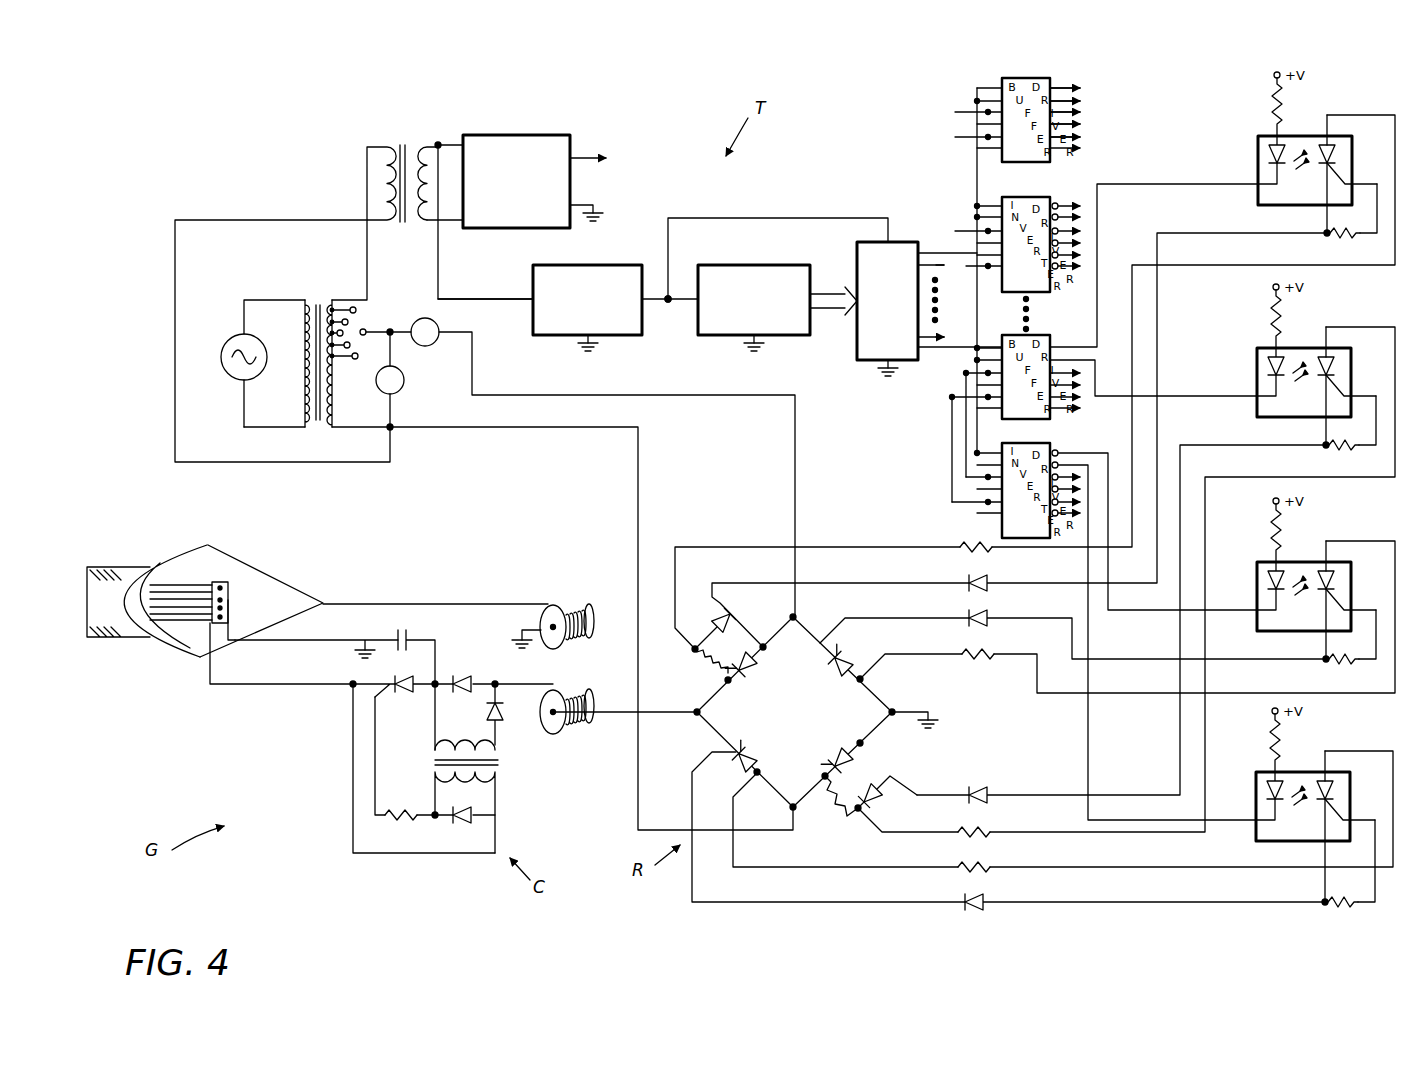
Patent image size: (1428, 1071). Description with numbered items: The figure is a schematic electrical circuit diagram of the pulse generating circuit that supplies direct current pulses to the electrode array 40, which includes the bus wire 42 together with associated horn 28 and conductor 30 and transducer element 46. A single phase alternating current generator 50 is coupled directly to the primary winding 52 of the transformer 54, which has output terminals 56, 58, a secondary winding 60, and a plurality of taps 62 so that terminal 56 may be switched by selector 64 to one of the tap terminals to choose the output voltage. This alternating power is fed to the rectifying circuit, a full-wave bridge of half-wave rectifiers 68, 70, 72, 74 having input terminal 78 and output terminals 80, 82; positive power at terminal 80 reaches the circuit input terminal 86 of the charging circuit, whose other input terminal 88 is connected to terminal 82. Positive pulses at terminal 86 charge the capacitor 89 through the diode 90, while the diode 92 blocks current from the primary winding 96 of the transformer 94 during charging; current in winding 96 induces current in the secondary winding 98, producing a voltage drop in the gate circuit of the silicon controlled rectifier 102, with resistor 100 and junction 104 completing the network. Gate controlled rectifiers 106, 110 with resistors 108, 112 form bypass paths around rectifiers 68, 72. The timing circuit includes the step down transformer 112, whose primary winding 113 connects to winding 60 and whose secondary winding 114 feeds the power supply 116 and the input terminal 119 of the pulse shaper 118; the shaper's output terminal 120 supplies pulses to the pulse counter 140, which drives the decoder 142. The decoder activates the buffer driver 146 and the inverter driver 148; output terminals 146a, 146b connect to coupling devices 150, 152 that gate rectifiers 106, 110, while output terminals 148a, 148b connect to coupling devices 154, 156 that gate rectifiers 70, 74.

The horn 28 is at (228, 566).
The conductor 30 is at (382, 604).
The electrode array 40 is at (170, 582).
The bus wire 42 is at (256, 684).
The transducer coil 46 is at (542, 688).
The single phase alternating current generator 50 is at (222, 344).
The primary winding 52 is at (298, 429).
The transformer 54 is at (312, 290).
The output terminal 56 is at (394, 336).
The output terminal 58 is at (392, 428).
The secondary winding 60 is at (332, 308).
The taps 62 is at (358, 312).
The selector contact 64 is at (368, 330).
The half-wave rectifier 68 is at (758, 672).
The half-wave rectifier 70 is at (852, 652).
The half-wave rectifier 72 is at (830, 750).
The half-wave rectifier 74 is at (748, 752).
The input terminal 78 is at (796, 804).
The output terminal 80 is at (694, 708).
The output terminal 82 is at (893, 710).
The circuit input terminal 86 is at (495, 684).
The circuit input terminal 88 is at (362, 640).
The capacitor 89 is at (412, 632).
The diode 90 is at (466, 680).
The diode 92 is at (502, 716).
The transformer 94 is at (498, 763).
The primary winding 96 is at (796, 616).
The secondary winding 98 is at (478, 782).
The resistor 100 is at (400, 808).
The silicon controlled rectifier 102 is at (401, 695).
The junction 104 is at (348, 690).
The gate controlled rectifier 106 is at (734, 622).
The resistor 108 is at (698, 664).
The gate controlled rectifier 110 is at (880, 802).
The step down transformer 112 is at (402, 146).
The primary winding 113 is at (368, 146).
The secondary winding 114 is at (418, 152).
The power supply 116 is at (529, 135).
The pulse shaper 118 is at (586, 265).
The input terminal 119 is at (510, 296).
The output terminal 120 is at (668, 301).
The pulse counter 140 is at (755, 264).
The decoder 142 is at (907, 242).
The buffer driver 146 is at (1004, 334).
The output terminal 146a is at (1062, 346).
The output terminal 146b is at (1096, 384).
The inverter driver 148 is at (1002, 526).
The output terminal 148a is at (1074, 450).
The output terminal 148b is at (1086, 462).
The coupling device 150 is at (1260, 134).
The coupling device 152 is at (1260, 348).
The coupling device 154 is at (1246, 572).
The coupling device 156 is at (1246, 782).